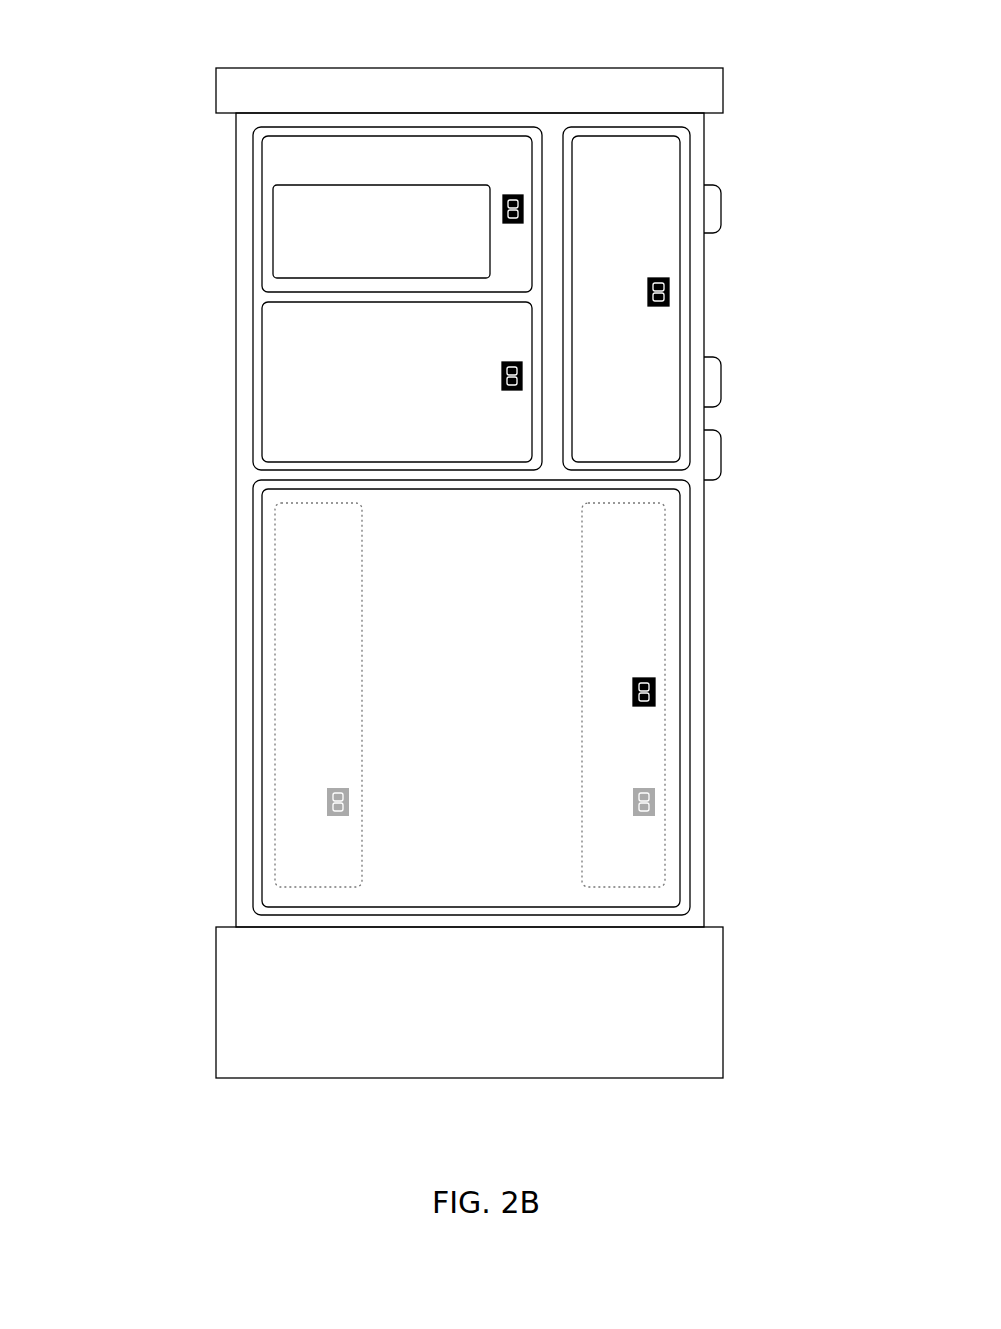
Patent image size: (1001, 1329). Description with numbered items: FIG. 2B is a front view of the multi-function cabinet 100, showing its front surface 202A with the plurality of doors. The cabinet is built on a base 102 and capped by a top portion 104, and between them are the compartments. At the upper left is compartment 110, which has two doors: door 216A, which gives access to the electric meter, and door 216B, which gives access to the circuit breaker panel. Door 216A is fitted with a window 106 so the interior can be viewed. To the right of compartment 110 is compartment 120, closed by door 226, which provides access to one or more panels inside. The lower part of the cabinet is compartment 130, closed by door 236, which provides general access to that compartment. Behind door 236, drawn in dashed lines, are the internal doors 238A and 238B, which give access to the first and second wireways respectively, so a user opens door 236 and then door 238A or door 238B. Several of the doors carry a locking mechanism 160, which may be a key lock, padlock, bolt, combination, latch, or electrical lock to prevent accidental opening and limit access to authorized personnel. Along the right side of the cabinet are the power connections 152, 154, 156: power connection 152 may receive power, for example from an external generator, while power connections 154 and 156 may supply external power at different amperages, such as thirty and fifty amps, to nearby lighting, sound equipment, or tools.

The multi-function cabinet 100 is at (137, 42).
The base 102 is at (469, 1002).
The top portion 104 is at (469, 90).
The window 106 is at (381, 231).
The compartment 110 is at (247, 130).
The compartment 120 is at (692, 126).
The compartment 130 is at (248, 478).
The power connection 152 is at (728, 181).
The power connection 154 is at (728, 355).
The power connection 156 is at (728, 426).
The locking mechanism 160 is at (527, 211).
The front surface 202A is at (220, 238).
The door 216A is at (397, 214).
The door 216B is at (397, 382).
The door 226 is at (626, 299).
The door 236 is at (471, 698).
The door 238A is at (318, 695).
The door 238B is at (623, 695).